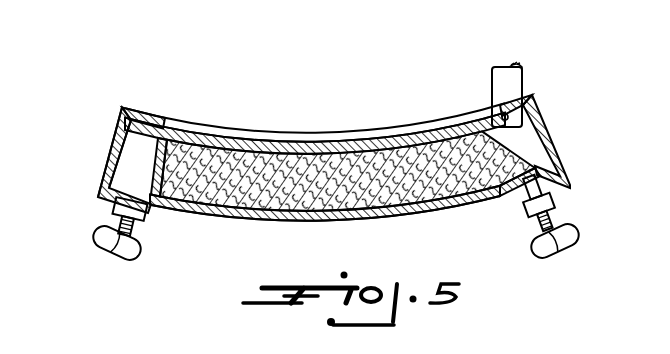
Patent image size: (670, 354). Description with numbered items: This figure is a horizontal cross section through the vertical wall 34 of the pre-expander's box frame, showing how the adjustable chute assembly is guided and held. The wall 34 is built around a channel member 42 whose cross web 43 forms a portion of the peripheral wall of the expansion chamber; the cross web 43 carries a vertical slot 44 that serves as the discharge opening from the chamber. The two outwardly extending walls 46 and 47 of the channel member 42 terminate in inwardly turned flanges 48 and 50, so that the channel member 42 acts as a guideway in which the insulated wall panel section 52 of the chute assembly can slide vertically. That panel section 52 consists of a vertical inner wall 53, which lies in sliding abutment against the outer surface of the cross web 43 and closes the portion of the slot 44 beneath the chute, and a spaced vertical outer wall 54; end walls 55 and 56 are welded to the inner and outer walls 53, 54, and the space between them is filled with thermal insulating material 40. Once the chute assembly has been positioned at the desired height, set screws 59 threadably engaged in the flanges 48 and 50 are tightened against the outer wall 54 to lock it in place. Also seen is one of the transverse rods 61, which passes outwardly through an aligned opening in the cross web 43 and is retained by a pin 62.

The vertical wall 34 is at (116, 122).
The thermal insulating material 40 is at (247, 205).
The channel member 42 is at (92, 181).
The cross web 43 is at (153, 122).
The vertical slot 44 is at (310, 138).
The outwardly extending wall 46 is at (558, 147).
The outwardly extending wall 47 is at (107, 155).
The inwardly turned flange 48 is at (108, 206).
The inwardly turned flange 50 is at (565, 198).
The insulated wall panel section 52 is at (430, 214).
The vertical inner wall 53 is at (370, 142).
The vertical outer wall 54 is at (314, 221).
The end wall 55 is at (171, 207).
The end wall 56 is at (485, 198).
The set screw 59 is at (118, 252).
The transverse rod 61 is at (511, 70).
The pin 62 is at (524, 118).